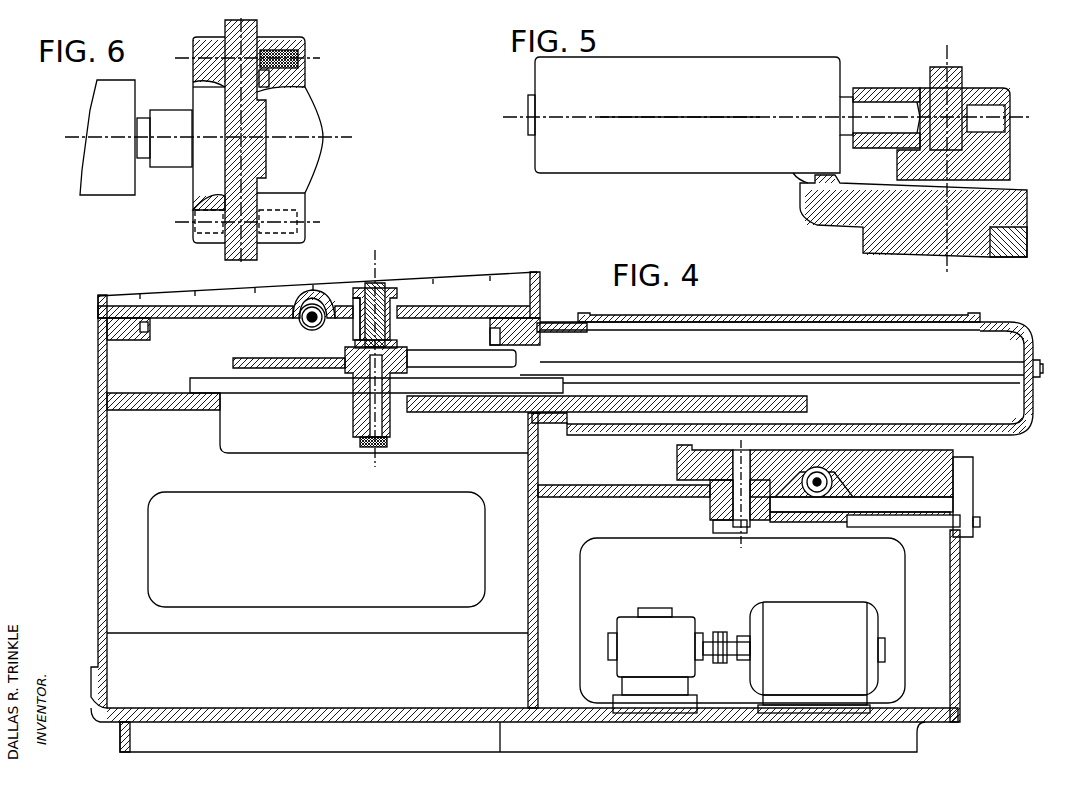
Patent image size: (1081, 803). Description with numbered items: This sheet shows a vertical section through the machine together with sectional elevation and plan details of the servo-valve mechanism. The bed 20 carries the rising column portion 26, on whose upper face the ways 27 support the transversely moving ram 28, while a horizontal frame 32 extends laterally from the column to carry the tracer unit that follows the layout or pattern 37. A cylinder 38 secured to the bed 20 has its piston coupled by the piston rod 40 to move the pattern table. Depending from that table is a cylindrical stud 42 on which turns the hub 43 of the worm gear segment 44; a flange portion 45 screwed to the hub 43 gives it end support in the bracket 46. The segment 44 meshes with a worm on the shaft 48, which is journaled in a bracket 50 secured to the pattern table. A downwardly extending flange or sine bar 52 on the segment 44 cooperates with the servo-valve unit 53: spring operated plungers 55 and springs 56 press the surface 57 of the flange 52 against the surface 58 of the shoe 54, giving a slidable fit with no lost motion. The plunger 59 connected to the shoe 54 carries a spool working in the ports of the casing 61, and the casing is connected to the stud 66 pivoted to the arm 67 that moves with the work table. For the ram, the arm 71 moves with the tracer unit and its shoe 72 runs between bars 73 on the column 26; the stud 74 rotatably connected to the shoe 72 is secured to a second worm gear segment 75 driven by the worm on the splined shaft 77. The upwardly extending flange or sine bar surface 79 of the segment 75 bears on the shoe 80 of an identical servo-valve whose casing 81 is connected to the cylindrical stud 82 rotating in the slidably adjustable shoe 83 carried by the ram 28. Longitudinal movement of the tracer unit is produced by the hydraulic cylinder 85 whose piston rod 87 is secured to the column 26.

In FIG. 4, the bed 20 is at (118, 481).
In FIG. 4, the column portion 26 is at (103, 372).
In FIG. 4, the ways 27 is at (143, 330).
In FIG. 4, the ram 28 is at (182, 306).
In FIG. 4, the horizontal frame 32 is at (573, 427).
In FIG. 4, the layout or pattern 37 is at (935, 458).
In FIG. 4, the cylinder 38 is at (795, 522).
In FIG. 4, the piston rod 40 is at (824, 500).
In FIG. 4, the cylindrical stud 42 is at (735, 463).
In FIG. 4, the hub 43 is at (715, 508).
In FIG. 4, the worm gear segment 44 is at (812, 512).
In FIG. 4, the flange portion 45 is at (700, 488).
In FIG. 4, the bracket 46 is at (757, 525).
In FIG. 4, the shaft 48 is at (950, 525).
In FIG. 4, the bracket 50 is at (974, 486).
In FIG. 4, the downwardly extending flange or sine bar 52 is at (713, 527).
In FIG. 6, the servo-valve unit 53 is at (92, 182).
In FIG. 5, the servo-valve unit 53 is at (680, 100).
In FIG. 6, the shoe 54 is at (292, 195).
In FIG. 5, the shoe 54 is at (1012, 137).
In FIG. 6, the spring operated plungers 55 is at (268, 84).
In FIG. 6, the springs 56 is at (300, 66).
In FIG. 6, the surface 57 is at (228, 247).
In FIG. 5, the surface 57 is at (935, 80).
In FIG. 6, the surface 58 is at (200, 200).
In FIG. 6, the plunger 59 is at (143, 148).
In FIG. 5, the plunger 59 is at (845, 135).
In FIG. 5, the casing 61 is at (820, 72).
In FIG. 5, the stud 66 is at (975, 250).
In FIG. 5, the arm 67 is at (862, 245).
In FIG. 4, the arm 71 is at (808, 405).
In FIG. 4, the shoe 72 is at (392, 416).
In FIG. 4, the bars 73 is at (270, 380).
In FIG. 4, the stud 74 is at (368, 421).
In FIG. 4, the worm gear segment 75 is at (248, 360).
In FIG. 4, the splined shaft 77 is at (712, 368).
In FIG. 4, the upwardly extending flange or sine bar surface 79 is at (428, 358).
In FIG. 4, the shoe 80 is at (392, 347).
In FIG. 4, the casing 81 is at (362, 322).
In FIG. 4, the cylindrical stud 82 is at (398, 292).
In FIG. 4, the slidably adjustable shoe 83 is at (368, 285).
In FIG. 4, the hydraulic cylinder 85 is at (304, 325).
In FIG. 4, the piston rod 87 is at (318, 321).